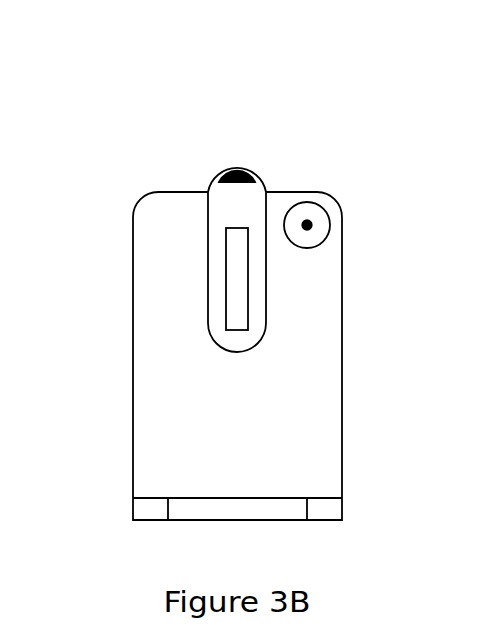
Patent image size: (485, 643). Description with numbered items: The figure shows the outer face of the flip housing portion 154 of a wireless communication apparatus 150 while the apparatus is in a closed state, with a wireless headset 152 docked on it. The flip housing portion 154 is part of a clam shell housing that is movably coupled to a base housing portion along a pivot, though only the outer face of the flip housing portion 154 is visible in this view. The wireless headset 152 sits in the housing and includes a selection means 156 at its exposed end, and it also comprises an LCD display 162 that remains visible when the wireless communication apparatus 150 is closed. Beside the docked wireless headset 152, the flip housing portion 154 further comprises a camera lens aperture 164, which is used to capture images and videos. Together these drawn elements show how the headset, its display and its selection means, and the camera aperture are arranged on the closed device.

The wireless communication apparatus 150 is at (164, 73).
The wireless headset 152 is at (253, 207).
The flip housing portion 154 is at (330, 353).
The selection means 156 is at (236, 172).
The LCD display 162 is at (233, 247).
The camera lens aperture 164 is at (323, 224).